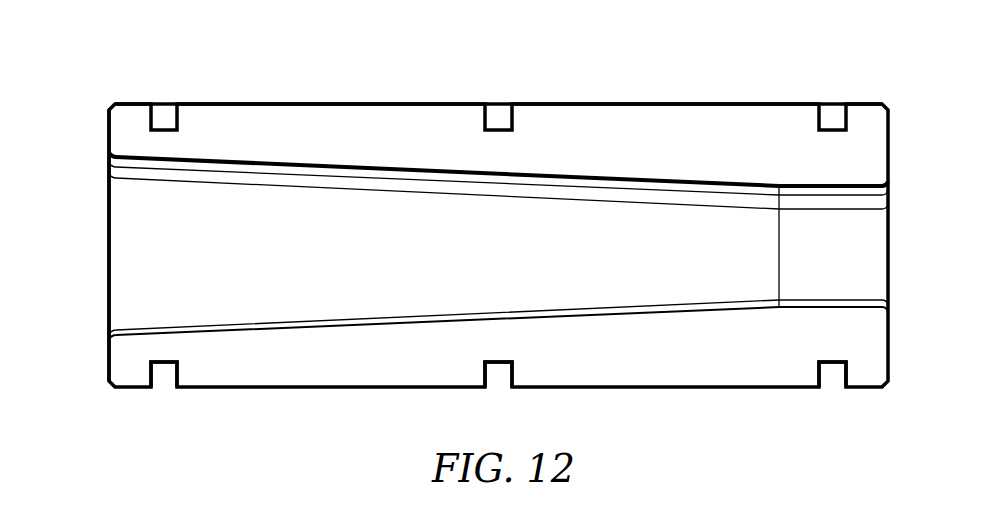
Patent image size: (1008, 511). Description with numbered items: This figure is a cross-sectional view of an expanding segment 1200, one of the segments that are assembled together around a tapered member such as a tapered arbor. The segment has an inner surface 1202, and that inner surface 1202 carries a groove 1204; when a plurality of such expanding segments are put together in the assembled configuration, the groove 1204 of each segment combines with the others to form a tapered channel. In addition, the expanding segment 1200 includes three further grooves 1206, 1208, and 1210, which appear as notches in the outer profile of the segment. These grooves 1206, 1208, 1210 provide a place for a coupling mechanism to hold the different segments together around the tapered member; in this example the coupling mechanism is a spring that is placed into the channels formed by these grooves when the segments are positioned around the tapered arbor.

The expanding segment 1200 is at (303, 103).
The inner surface 1202 is at (678, 125).
The groove 1204 is at (115, 295).
The groove 1206 is at (825, 373).
The groove 1208 is at (490, 373).
The groove 1210 is at (172, 373).